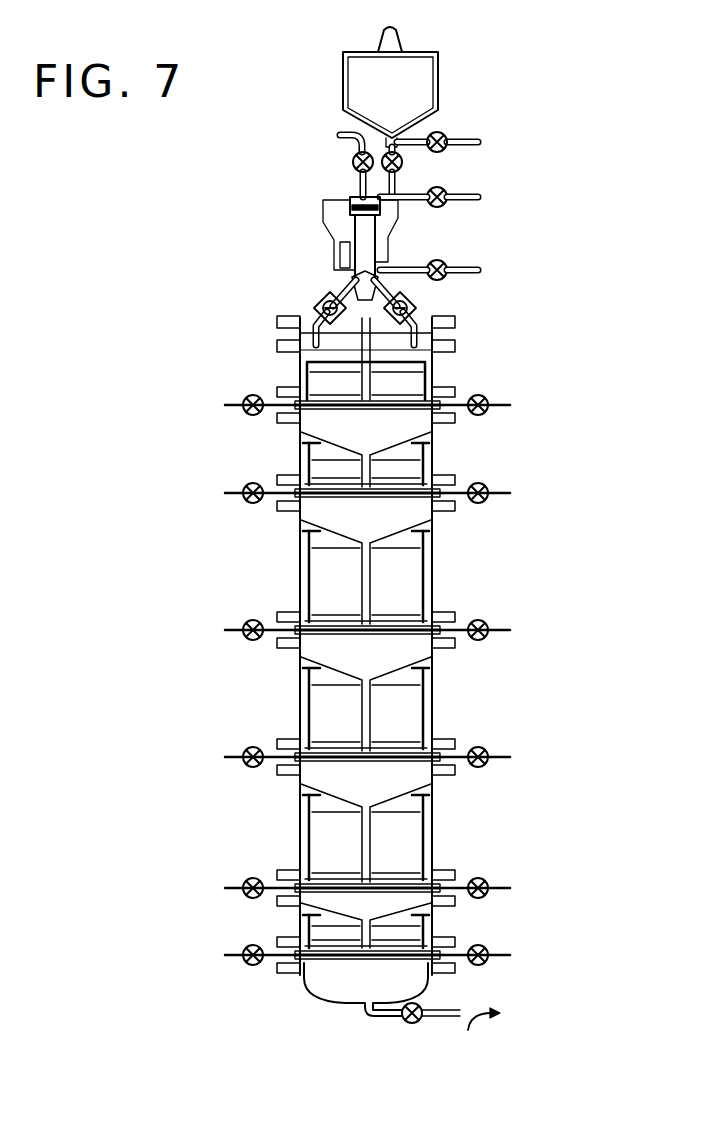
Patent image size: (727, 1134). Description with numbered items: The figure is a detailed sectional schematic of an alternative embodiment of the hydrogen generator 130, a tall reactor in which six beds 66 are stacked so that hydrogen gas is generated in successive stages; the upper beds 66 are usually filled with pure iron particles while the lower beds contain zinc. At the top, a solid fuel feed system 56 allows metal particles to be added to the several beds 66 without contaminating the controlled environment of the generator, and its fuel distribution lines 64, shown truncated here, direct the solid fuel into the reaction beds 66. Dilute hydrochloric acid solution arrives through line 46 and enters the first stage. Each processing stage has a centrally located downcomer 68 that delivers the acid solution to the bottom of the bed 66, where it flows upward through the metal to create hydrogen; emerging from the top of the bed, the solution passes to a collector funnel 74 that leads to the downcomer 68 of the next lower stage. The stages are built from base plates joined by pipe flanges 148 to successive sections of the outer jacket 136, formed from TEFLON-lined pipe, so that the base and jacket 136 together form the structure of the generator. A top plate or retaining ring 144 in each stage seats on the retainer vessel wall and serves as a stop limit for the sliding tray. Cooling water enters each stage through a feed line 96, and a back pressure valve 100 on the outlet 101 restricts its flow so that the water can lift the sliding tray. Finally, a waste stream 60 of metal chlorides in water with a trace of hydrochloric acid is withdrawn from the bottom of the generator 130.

The solid fuel feed system 56 is at (493, 78).
The line 46 is at (336, 297).
The fuel distribution lines 64 is at (314, 322).
The hydrogen generator 130 is at (157, 391).
The pipe flanges 148 is at (277, 393).
The outer jacket 136 is at (437, 372).
The beds 66 is at (425, 388).
The downcomer 68 is at (428, 443).
The collector funnel 74 is at (328, 445).
The top plate or retaining ring 144 is at (302, 437).
The feed line 96 is at (263, 397).
The outlet 101 is at (470, 402).
The back pressure valve 100 is at (490, 404).
The waste stream 60 is at (480, 1035).